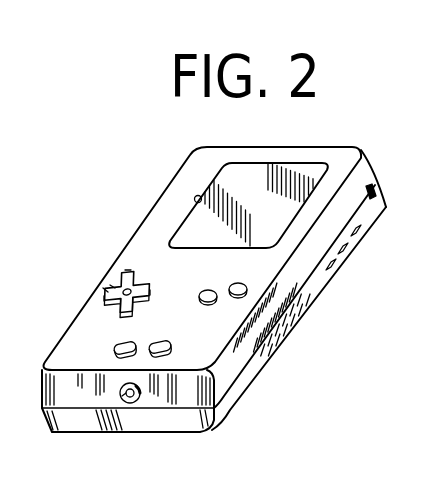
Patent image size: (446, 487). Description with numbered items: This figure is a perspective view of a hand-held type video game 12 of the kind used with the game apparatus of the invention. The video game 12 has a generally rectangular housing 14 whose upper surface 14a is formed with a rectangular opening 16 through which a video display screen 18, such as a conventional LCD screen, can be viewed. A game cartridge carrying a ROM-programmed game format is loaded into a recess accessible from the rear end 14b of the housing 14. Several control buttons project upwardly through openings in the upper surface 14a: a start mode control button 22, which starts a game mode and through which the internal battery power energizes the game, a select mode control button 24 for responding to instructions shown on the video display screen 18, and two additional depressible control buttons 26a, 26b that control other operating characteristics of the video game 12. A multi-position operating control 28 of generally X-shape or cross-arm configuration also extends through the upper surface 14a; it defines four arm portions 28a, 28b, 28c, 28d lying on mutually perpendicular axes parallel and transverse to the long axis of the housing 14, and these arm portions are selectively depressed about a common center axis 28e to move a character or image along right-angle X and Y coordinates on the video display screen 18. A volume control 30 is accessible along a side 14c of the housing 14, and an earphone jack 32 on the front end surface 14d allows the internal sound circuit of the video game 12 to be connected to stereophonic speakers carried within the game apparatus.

The hand-held type video game 12 is at (152, 187).
The housing 14 is at (229, 280).
The upper surface 14a is at (338, 158).
The rear end 14b is at (368, 152).
The side 14c is at (233, 395).
The front end surface 14d is at (83, 423).
The rectangular opening 16 is at (196, 196).
The video display screen 18 is at (250, 173).
The start mode control button 22 is at (173, 344).
The select mode control button 24 is at (115, 346).
The depressible control button 26a is at (247, 290).
The depressible control button 26b is at (200, 297).
The multi-position operating control 28 is at (107, 251).
The arm portion 28a is at (103, 303).
The arm portion 28b is at (150, 294).
The arm portion 28c is at (128, 268).
The arm portion 28d is at (104, 290).
The common center axis 28e is at (77, 257).
The volume control 30 is at (333, 268).
The earphone jack 32 is at (130, 405).